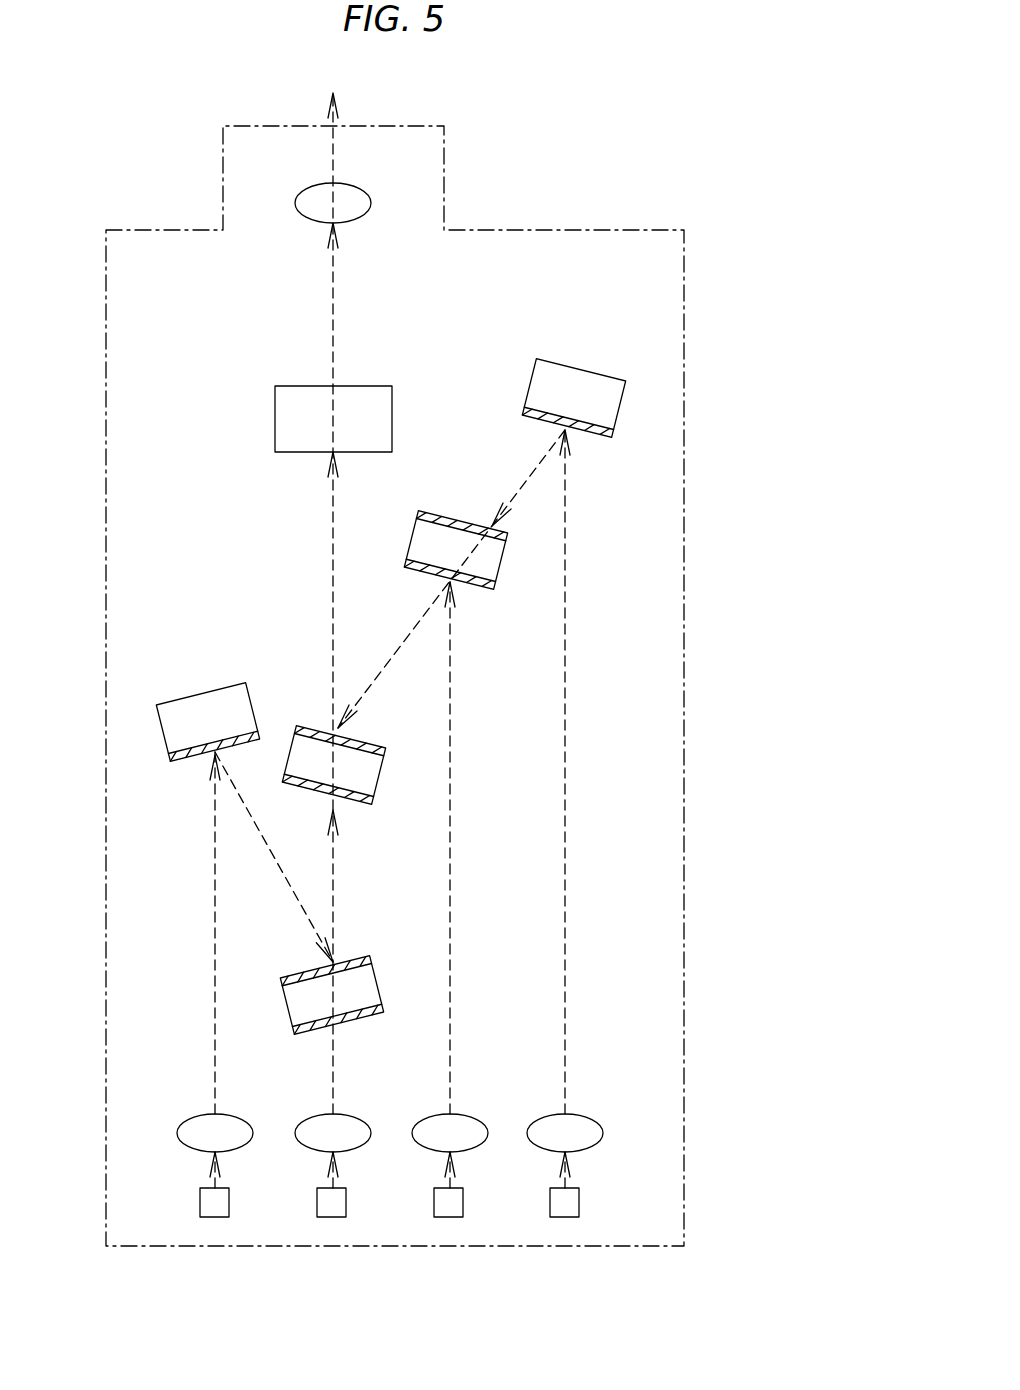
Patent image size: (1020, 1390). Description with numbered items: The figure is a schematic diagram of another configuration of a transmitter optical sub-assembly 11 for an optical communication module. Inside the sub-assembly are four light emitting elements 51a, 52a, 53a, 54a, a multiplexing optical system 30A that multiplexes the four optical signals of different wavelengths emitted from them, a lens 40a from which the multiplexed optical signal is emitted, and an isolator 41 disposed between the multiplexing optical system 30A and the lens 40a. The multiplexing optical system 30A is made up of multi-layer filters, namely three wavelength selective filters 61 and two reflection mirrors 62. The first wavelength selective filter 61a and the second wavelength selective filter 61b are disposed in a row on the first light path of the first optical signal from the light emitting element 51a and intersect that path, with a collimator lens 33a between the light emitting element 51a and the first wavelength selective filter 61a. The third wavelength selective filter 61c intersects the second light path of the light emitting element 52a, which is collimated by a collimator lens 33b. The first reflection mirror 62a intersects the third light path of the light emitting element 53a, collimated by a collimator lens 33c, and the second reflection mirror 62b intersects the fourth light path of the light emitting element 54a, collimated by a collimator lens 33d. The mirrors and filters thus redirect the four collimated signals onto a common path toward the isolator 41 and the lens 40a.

The transmitter optical sub-assembly 11 is at (603, 230).
The multiplexing optical system 30A is at (662, 505).
The collimator lens 33a is at (346, 1116).
The collimator lens 33b is at (470, 1118).
The collimator lens 33c is at (178, 1136).
The collimator lens 33d is at (585, 1118).
The lens 40a is at (295, 203).
The isolator 41 is at (275, 425).
The light emitting element 51a is at (318, 1198).
The light emitting element 52a is at (435, 1198).
The light emitting element 53a is at (200, 1198).
The light emitting element 54a is at (551, 1198).
The wavelength selective filters 61 is at (395, 773).
The first wavelength selective filter 61a is at (253, 975).
The second wavelength selective filter 61b is at (412, 760).
The third wavelength selective filter 61c is at (524, 565).
The reflection mirrors 62 is at (400, 502).
The first reflection mirror 62a is at (172, 680).
The second reflection mirror 62b is at (580, 352).